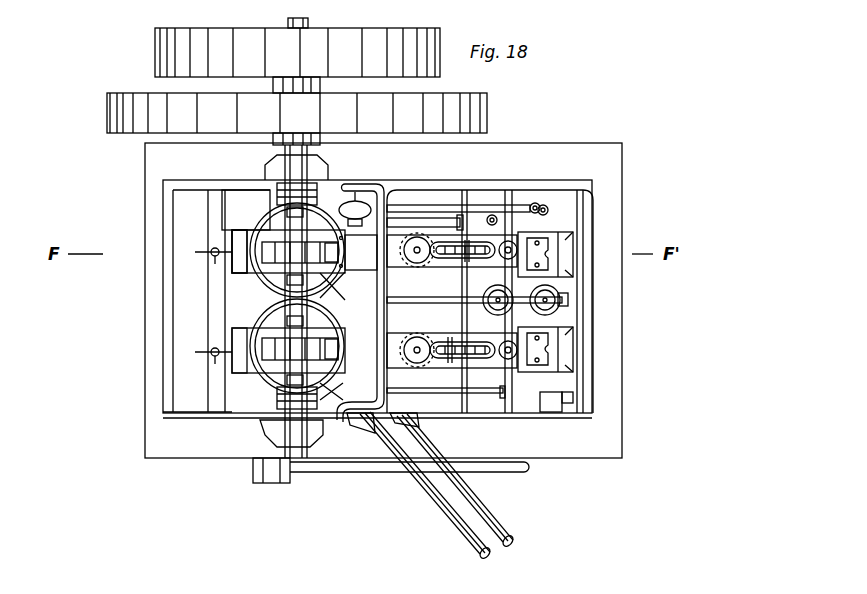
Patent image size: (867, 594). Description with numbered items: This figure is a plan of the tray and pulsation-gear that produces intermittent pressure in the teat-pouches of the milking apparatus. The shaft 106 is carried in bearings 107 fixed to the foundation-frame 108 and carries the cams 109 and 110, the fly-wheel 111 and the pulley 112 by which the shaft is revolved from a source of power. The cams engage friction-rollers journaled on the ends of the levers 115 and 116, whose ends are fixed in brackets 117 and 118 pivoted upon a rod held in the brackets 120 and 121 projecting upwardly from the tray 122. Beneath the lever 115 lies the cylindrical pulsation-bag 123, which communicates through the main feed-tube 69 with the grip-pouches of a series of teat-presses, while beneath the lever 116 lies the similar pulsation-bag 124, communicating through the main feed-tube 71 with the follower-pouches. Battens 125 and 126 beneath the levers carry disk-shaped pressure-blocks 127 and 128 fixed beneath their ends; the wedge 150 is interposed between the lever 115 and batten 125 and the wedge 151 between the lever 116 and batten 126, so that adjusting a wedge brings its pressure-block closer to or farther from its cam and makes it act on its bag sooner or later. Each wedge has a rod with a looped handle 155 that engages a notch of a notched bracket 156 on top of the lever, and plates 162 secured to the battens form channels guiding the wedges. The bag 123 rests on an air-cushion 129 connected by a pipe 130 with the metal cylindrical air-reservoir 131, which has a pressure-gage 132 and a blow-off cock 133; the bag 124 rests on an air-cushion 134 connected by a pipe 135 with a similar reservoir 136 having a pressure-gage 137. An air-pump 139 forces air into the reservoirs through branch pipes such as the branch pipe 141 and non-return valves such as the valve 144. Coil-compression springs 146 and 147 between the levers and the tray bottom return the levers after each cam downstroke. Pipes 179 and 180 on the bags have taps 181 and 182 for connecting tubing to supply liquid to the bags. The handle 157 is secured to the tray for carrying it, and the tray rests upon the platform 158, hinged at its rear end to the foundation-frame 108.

The main feed-tube 69 is at (463, 505).
The main feed-tube 71 is at (430, 497).
The shaft 106 is at (290, 372).
The bearings 107 is at (273, 170).
The foundation-frame 108 is at (155, 427).
The cam 109 is at (263, 257).
The cam 110 is at (333, 345).
The fly-wheel 111 is at (472, 111).
The pulley 112 is at (166, 50).
The lever 115 is at (366, 258).
The lever 116 is at (362, 420).
The bracket 117 is at (548, 243).
The bracket 118 is at (545, 343).
The bracket 120 is at (577, 190).
The bracket 121 is at (547, 395).
The tray 122 is at (523, 407).
The pulsation-bag 123 is at (268, 230).
The pulsation-bag 124 is at (258, 333).
The batten 125 is at (233, 255).
The batten 126 is at (237, 363).
The pressure-block 127 is at (275, 275).
The pressure-block 128 is at (273, 320).
The air-cushion 129 is at (327, 215).
The pipe 130 is at (405, 222).
The air-reservoir 131 is at (480, 207).
The pressure-gage 132 is at (543, 208).
The blow-off cock 133 is at (492, 218).
The air-cushion 134 is at (228, 382).
The pipe 135 is at (468, 392).
The reservoir 136 is at (555, 395).
The pressure-gage 137 is at (557, 290).
The air-pump 139 is at (355, 200).
The branch pipe 141 is at (455, 212).
The non-return valve 144 is at (515, 395).
The coil-compression spring 146 is at (405, 240).
The coil-compression spring 147 is at (400, 360).
The wedge 150 is at (243, 240).
The wedge 151 is at (233, 345).
The looped handle 155 is at (468, 265).
The notched bracket 156 is at (440, 258).
The handle 157 is at (345, 420).
The platform 158 is at (607, 390).
The plates 162 is at (238, 252).
The pipe 179 is at (232, 250).
The pipe 180 is at (225, 362).
The tap 181 is at (213, 254).
The tap 182 is at (212, 357).